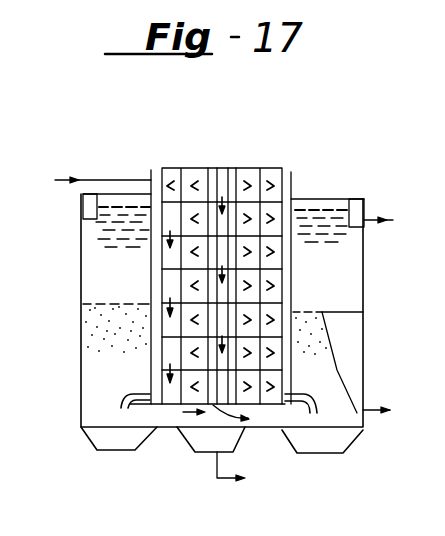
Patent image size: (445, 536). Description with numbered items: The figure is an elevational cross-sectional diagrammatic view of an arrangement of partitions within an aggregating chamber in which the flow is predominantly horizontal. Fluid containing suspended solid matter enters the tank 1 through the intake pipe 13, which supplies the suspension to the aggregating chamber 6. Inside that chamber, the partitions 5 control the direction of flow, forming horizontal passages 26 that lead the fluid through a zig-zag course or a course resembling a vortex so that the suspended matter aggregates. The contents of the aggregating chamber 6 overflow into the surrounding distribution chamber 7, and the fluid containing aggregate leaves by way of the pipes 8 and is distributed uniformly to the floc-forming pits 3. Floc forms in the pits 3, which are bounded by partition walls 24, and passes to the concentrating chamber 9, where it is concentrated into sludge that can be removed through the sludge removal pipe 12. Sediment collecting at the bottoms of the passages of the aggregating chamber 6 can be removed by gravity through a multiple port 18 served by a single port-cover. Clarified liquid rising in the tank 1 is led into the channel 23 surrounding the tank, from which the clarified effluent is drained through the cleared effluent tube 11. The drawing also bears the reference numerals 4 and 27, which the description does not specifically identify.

The tank 1 is at (75, 312).
The floc-forming pits 3 is at (80, 361).
The liquid 4 is at (90, 273).
The partitions 5 is at (206, 168).
The aggregating chamber 6 is at (255, 160).
The distribution chamber 7 is at (150, 357).
The pipes 8 is at (123, 394).
The concentrating chamber 9 is at (144, 427).
The cleared effluent tube 11 is at (366, 226).
The sludge removal pipe 12 is at (222, 479).
The intake pipe 13 is at (92, 178).
The multiple port 18 is at (213, 405).
The channel 23 is at (83, 208).
The partition walls 24 is at (328, 338).
The horizontal passages 26 is at (280, 169).
The outlet 27 is at (365, 416).